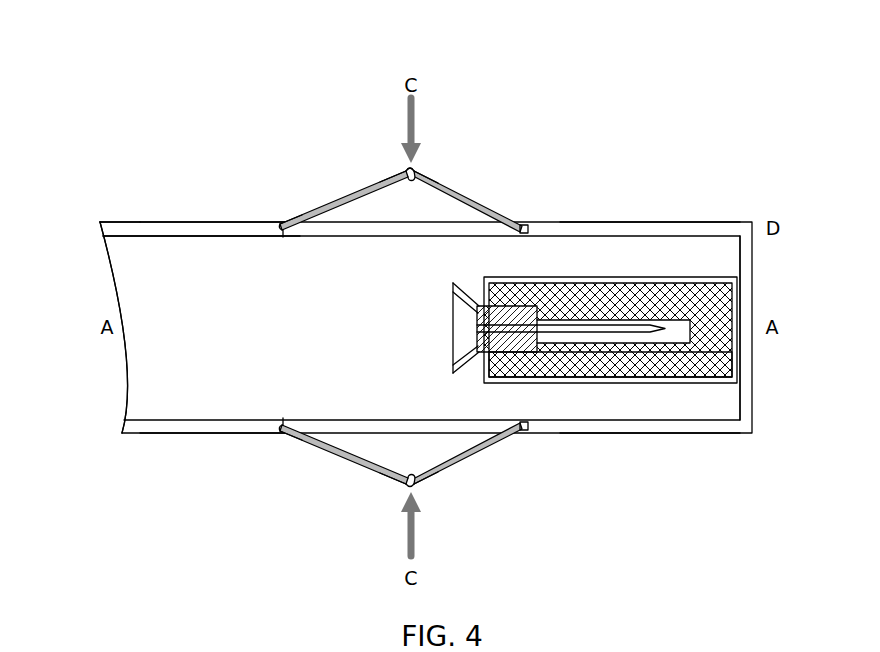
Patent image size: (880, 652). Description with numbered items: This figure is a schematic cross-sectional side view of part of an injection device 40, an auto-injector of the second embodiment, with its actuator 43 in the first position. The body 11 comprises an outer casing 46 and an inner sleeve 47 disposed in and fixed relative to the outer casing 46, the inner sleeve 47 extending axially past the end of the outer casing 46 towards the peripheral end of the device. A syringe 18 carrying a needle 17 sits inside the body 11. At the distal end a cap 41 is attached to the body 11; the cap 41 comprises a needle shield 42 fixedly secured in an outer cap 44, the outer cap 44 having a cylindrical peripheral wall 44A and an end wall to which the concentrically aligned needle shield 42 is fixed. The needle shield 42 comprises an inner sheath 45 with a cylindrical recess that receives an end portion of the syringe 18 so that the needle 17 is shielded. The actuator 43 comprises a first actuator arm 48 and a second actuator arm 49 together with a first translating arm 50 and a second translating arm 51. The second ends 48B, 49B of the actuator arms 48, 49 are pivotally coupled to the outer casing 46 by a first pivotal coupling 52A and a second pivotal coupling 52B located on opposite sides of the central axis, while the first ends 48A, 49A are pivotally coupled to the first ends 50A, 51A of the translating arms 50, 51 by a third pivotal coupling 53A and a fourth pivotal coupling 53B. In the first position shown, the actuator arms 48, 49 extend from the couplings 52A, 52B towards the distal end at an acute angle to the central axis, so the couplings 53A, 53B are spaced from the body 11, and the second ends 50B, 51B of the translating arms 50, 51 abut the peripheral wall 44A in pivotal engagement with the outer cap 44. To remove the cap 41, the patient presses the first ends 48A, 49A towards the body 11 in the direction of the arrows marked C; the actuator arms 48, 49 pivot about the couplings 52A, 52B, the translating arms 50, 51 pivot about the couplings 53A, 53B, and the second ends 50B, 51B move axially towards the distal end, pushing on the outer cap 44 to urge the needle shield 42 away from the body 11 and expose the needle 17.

The injection device 40 is at (89, 140).
The cap 41 is at (757, 208).
The needle shield 42 is at (716, 303).
The actuator 43 is at (390, 124).
The outer cap 44 is at (705, 222).
The cylindrical peripheral wall 44A is at (602, 230).
The inner sheath 45 is at (726, 360).
The outer casing 46 is at (113, 228).
The inner sleeve 47 is at (130, 243).
The body 11 is at (185, 228).
The needle 17 is at (601, 331).
The syringe 18 is at (140, 368).
The first actuator arm 48 is at (338, 200).
The first end of the first actuator arm 48A is at (398, 176).
The second end of the first actuator arm 48B is at (288, 222).
The second actuator arm 49 is at (345, 455).
The first end of the second actuator arm 49A is at (400, 480).
The second end of the second actuator arm 49B is at (288, 433).
The first translating arm 50 is at (478, 205).
The first end of the first translating arm 50A is at (420, 178).
The second end of the first translating arm 50B is at (527, 226).
The second translating arm 51 is at (470, 455).
The first end of the second translating arm 51A is at (420, 482).
The second end of the second translating arm 51B is at (527, 432).
The first pivotal coupling 52A is at (279, 228).
The second pivotal coupling 52B is at (279, 428).
The third pivotal coupling 53A is at (413, 170).
The fourth pivotal coupling 53B is at (405, 488).